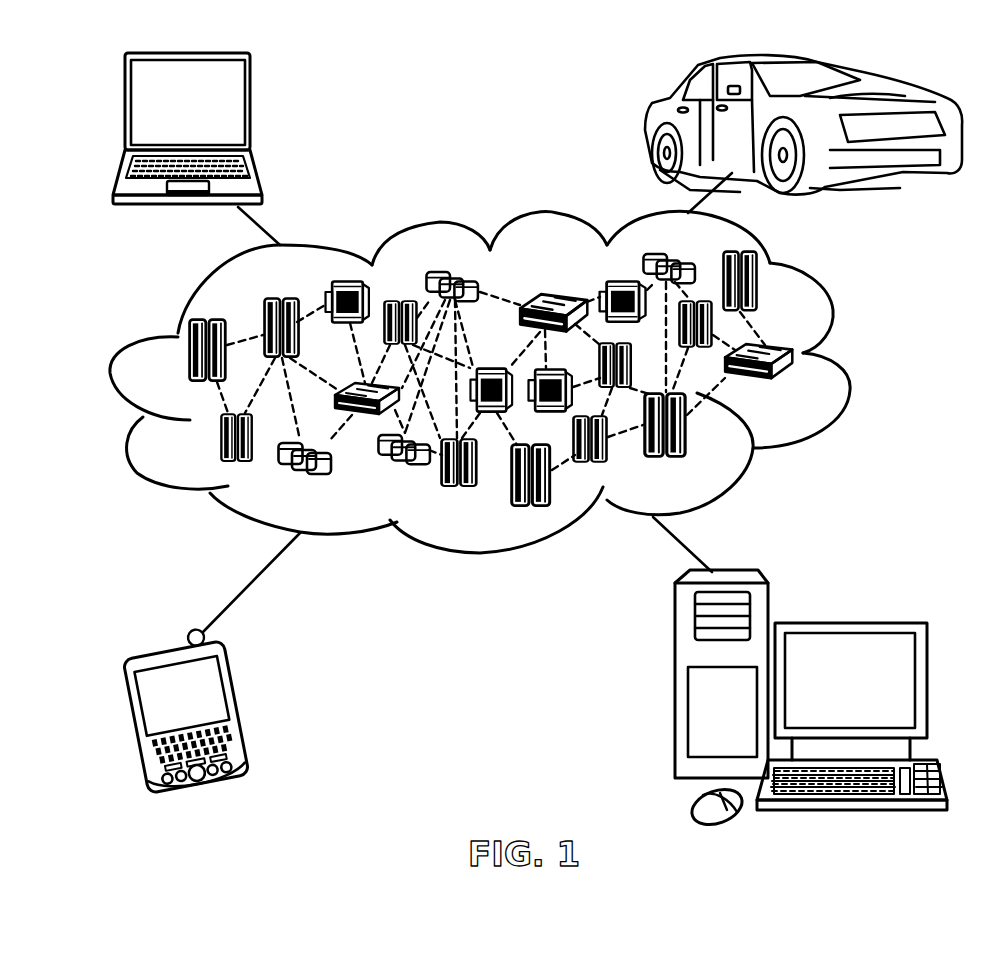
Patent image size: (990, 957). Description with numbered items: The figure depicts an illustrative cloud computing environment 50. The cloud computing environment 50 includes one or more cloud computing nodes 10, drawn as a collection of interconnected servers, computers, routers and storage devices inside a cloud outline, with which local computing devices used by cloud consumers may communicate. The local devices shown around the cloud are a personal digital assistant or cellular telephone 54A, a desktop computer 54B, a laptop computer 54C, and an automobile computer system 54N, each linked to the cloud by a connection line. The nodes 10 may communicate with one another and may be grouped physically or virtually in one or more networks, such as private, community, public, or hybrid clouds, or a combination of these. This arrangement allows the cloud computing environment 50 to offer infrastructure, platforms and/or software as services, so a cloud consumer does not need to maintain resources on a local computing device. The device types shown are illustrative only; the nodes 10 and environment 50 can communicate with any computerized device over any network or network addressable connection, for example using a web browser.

The cloud computing nodes 10 is at (803, 391).
The cloud computing environment 50 is at (848, 357).
The personal digital assistant or cellular telephone 54A is at (242, 707).
The desktop computer 54B is at (848, 622).
The laptop computer 54C is at (252, 108).
The automobile computer system 54N is at (650, 125).